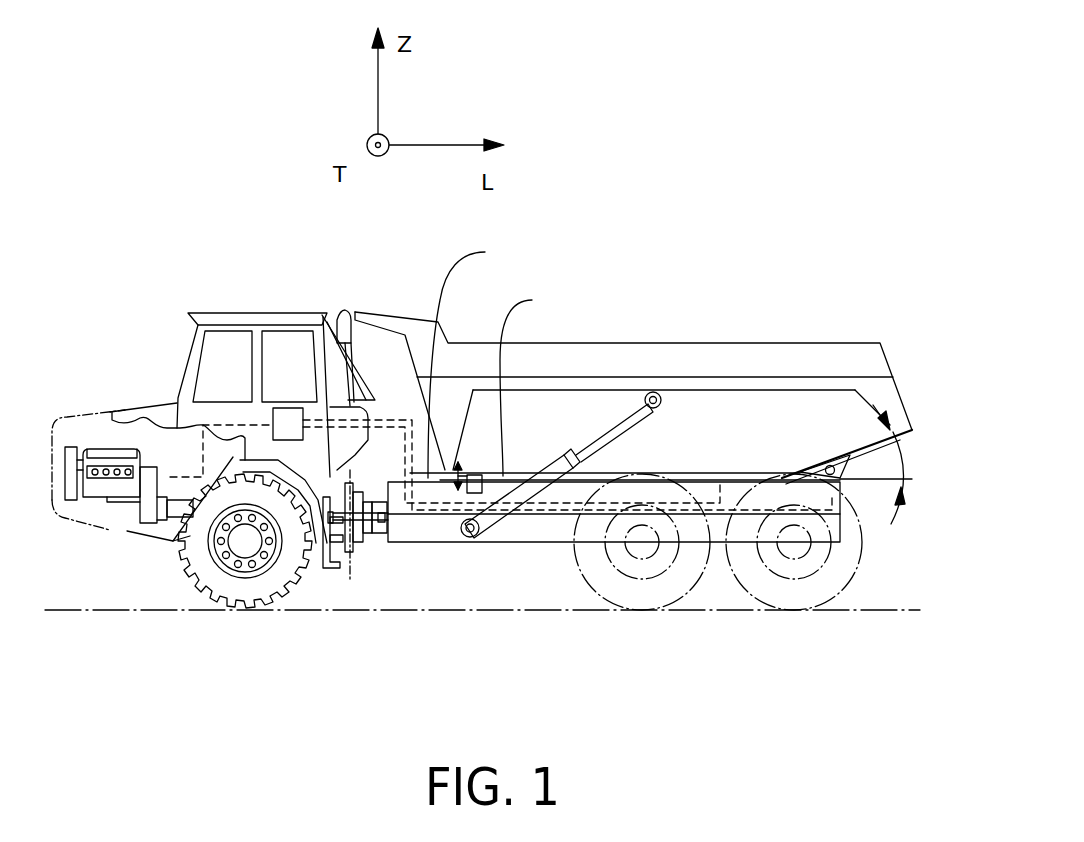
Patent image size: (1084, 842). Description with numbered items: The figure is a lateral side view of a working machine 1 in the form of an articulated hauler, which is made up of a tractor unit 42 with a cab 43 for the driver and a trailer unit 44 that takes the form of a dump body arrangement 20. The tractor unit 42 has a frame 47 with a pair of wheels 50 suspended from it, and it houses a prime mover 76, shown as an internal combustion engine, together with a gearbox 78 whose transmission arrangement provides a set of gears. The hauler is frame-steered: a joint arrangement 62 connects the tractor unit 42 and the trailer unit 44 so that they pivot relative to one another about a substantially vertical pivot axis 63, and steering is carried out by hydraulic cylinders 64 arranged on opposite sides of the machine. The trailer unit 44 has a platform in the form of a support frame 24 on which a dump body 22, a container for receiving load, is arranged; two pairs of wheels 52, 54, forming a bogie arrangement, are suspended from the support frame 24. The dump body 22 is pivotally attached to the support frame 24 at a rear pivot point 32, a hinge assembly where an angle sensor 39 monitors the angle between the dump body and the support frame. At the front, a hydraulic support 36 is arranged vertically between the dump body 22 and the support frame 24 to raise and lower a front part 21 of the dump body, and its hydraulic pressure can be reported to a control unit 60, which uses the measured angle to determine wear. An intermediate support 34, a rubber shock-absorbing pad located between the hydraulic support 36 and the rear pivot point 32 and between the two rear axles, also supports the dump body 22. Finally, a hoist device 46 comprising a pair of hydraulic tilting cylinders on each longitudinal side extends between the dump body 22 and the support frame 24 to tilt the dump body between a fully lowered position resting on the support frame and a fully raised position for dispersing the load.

The working machine 1 is at (570, 202).
The dump body arrangement 20 is at (716, 280).
The trailer unit 44 is at (633, 367).
The front part of the dump body 21 is at (566, 415).
The dump body 22 is at (630, 367).
The support frame 24 is at (436, 528).
The rear pivot point 32 is at (829, 466).
The intermediate support 34 is at (730, 472).
The hydraulic support 36 is at (462, 460).
The angle sensor 39 is at (832, 466).
The tractor unit 42 is at (325, 292).
The cab 43 is at (228, 320).
The hoist device 46 is at (535, 495).
The frame 47 is at (160, 545).
The pair of wheels 50 is at (238, 575).
The pair of wheels 52 is at (647, 588).
The pair of wheels 54 is at (798, 588).
The control unit 60 is at (288, 408).
The joint arrangement 62 is at (387, 533).
The pivot axis 63 is at (360, 566).
The hydraulic cylinders 64 is at (388, 532).
The prime mover 76 is at (107, 465).
The gearbox 78 is at (177, 507).